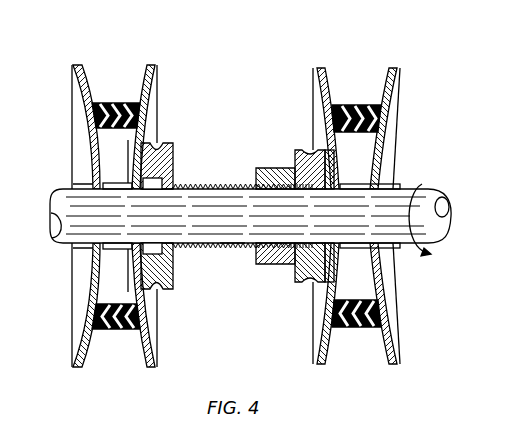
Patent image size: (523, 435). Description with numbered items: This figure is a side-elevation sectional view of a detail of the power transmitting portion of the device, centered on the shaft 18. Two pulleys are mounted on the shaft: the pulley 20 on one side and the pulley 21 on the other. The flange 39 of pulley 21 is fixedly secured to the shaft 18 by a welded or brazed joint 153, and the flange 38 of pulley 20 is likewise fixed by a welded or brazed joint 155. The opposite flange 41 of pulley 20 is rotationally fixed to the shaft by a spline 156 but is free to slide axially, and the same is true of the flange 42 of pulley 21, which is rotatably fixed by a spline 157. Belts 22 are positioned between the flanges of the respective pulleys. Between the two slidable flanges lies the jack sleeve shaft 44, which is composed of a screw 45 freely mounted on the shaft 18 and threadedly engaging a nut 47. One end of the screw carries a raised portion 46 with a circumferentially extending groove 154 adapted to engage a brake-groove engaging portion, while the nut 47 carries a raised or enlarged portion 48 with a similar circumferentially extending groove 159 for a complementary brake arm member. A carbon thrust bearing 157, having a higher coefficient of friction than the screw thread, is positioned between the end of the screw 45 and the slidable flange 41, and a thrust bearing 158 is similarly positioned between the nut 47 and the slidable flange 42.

The shaft 18 is at (430, 197).
The pulley 20 is at (102, 64).
The pulley 21 is at (372, 64).
The belts 22 is at (122, 101).
The flange of pulley 20 38 is at (75, 95).
The flange of pulley 21 39 is at (388, 118).
The flange of pulley 20 41 is at (148, 140).
The flange of pulley 21 42 is at (318, 84).
The jack sleeve shaft 44 is at (232, 258).
The screw 45 is at (212, 183).
The raised portion 46 is at (165, 160).
The nut 47 is at (265, 168).
The raised or enlarged portion 48 is at (305, 153).
The welded or brazed joint 153 is at (378, 187).
The circumferentially extending groove 154 is at (150, 172).
The welded or brazed joint 155 is at (88, 184).
The spline 156 is at (115, 182).
The spline / thrust bearing 157 is at (141, 150).
The thrust bearing 158 is at (332, 126).
The circumferentially extending groove 159 is at (326, 158).